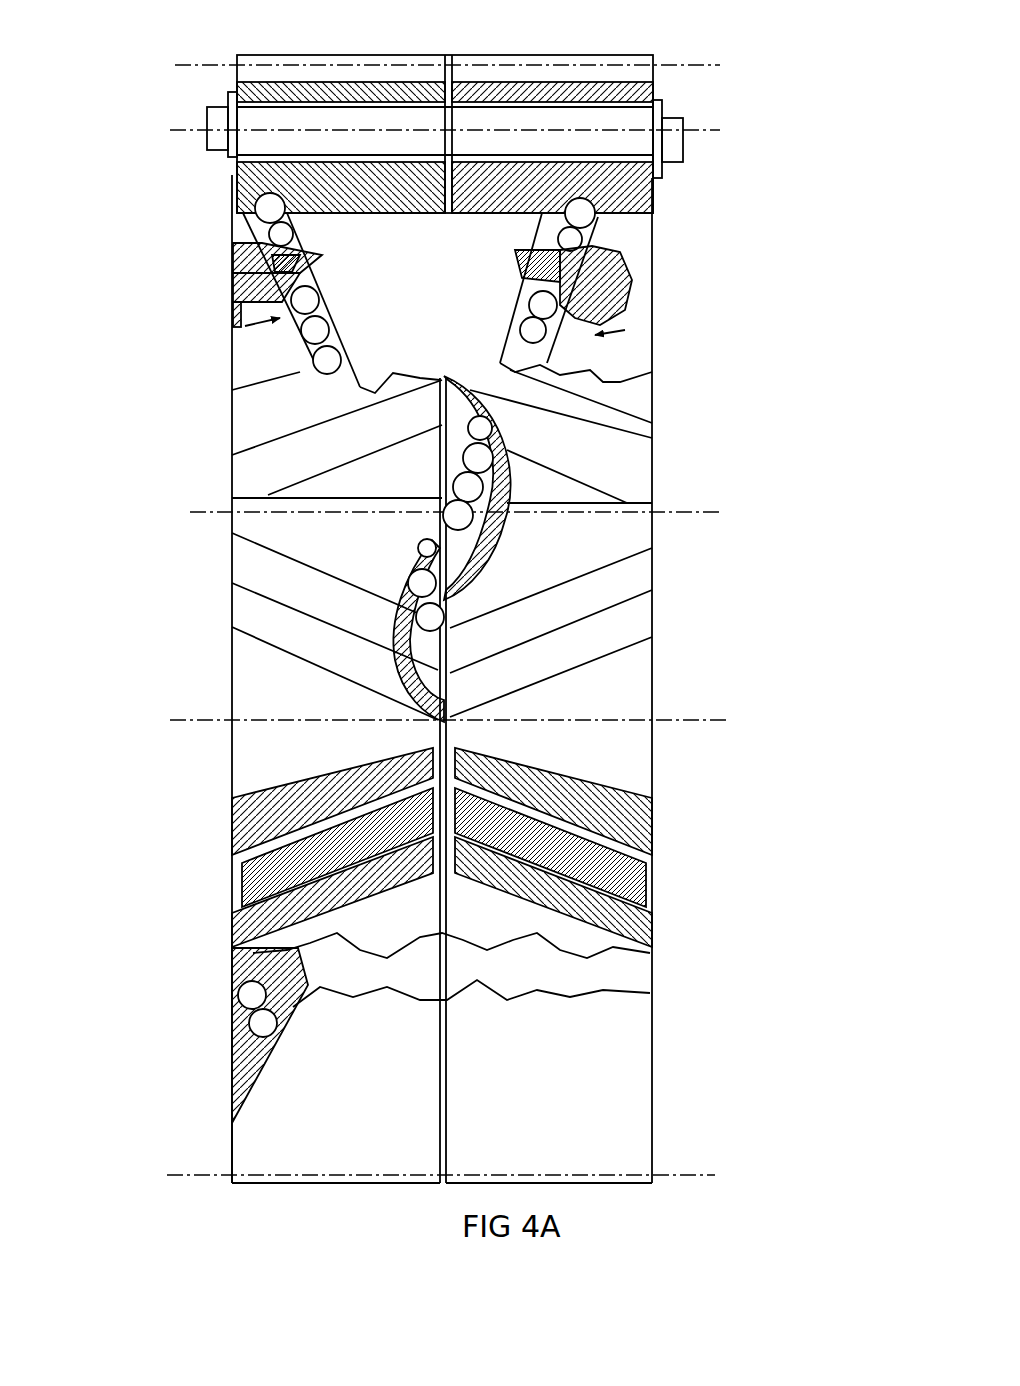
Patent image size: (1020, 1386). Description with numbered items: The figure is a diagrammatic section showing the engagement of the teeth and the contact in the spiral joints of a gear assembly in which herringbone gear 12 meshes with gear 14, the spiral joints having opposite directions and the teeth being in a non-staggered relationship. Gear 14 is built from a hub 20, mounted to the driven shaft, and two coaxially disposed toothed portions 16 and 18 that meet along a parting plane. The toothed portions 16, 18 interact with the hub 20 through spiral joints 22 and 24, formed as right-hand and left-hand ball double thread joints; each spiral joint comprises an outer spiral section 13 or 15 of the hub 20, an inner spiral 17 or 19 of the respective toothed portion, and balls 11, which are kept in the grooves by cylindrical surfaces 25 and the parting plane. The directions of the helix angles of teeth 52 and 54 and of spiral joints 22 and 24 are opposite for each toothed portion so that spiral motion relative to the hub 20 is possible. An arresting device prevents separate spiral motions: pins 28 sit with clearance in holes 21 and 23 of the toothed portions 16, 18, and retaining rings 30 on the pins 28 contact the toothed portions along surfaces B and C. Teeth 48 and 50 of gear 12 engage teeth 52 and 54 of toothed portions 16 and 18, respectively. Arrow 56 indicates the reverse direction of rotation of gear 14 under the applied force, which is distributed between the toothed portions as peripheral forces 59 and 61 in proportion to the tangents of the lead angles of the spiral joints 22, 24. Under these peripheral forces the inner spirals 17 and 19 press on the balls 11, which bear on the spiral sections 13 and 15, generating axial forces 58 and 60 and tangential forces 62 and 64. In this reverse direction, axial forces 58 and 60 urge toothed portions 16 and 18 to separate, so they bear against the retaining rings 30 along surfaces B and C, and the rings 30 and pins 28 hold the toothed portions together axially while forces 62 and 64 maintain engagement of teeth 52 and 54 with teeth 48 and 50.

The balls 11 is at (297, 390).
The herringbone gear 12 is at (585, 537).
The outer spiral section 13 is at (237, 212).
The gear 14 is at (345, 180).
The outer spiral section 15 is at (683, 160).
The toothed portion 16 is at (268, 1150).
The inner spiral 17 is at (235, 172).
The toothed portion 18 is at (622, 1027).
The inner spiral 19 is at (538, 240).
The hub 20 is at (652, 423).
The hole 21 is at (398, 88).
The spiral joint 22 is at (297, 392).
The hole 23 is at (520, 88).
The spiral joint 24 is at (545, 345).
The cylindrical surface 25 is at (245, 982).
The pin 28 is at (443, 125).
The retaining ring 30 is at (663, 105).
The teeth 48 is at (262, 812).
The teeth 50 is at (620, 833).
The teeth 52 is at (230, 855).
The teeth 54 is at (613, 900).
The arrow 56 is at (792, 493).
The arrow 58 is at (235, 300).
The arrow 59 is at (337, 878).
The arrow 60 is at (513, 272).
The arrow 61 is at (627, 967).
The arrow 62 is at (233, 253).
The arrow 64 is at (598, 247).
The contacting surface B is at (227, 663).
The contacting surface C is at (652, 625).